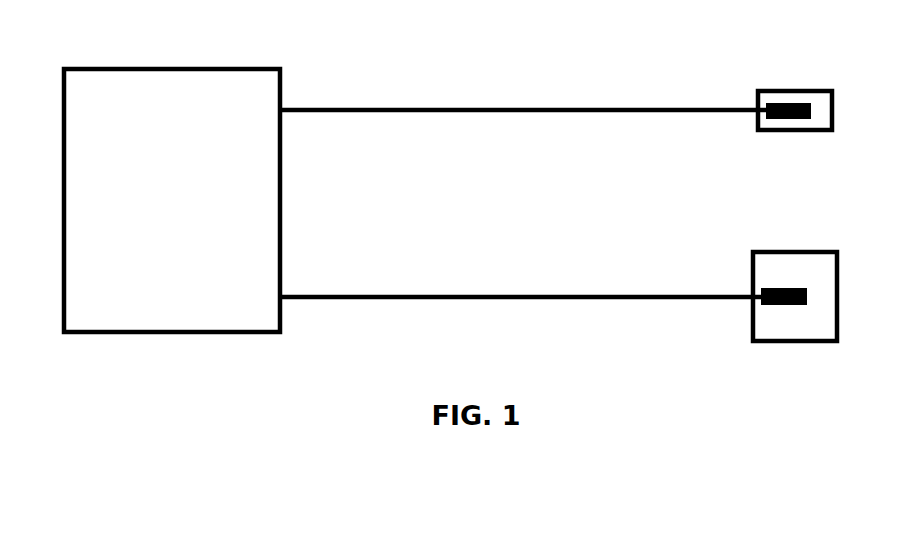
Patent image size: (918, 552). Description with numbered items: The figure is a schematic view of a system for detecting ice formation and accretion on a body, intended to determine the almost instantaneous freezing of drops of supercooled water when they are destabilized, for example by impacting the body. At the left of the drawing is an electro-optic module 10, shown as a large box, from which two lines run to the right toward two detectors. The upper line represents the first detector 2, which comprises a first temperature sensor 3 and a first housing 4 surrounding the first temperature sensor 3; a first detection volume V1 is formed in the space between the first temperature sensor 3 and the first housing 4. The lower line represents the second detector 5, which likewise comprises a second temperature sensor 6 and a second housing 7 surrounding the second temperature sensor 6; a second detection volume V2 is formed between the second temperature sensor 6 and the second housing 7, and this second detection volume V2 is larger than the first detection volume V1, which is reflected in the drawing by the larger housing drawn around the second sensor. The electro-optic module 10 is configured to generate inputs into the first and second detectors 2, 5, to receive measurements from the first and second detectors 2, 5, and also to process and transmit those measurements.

The electro-optic module 10 is at (172, 200).
The first detector 2 is at (440, 103).
The second detector 5 is at (442, 292).
The first detection volume V1 is at (823, 105).
The first temperature sensor 3 is at (778, 103).
The first housing 4 is at (757, 129).
The second detection volume V2 is at (823, 268).
The second temperature sensor 6 is at (772, 287).
The second housing 7 is at (752, 340).